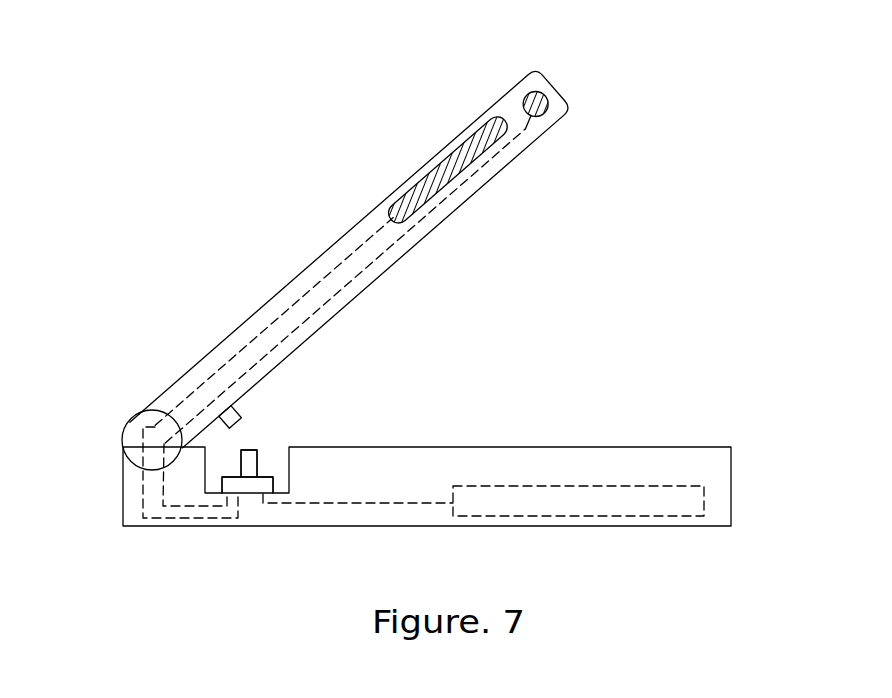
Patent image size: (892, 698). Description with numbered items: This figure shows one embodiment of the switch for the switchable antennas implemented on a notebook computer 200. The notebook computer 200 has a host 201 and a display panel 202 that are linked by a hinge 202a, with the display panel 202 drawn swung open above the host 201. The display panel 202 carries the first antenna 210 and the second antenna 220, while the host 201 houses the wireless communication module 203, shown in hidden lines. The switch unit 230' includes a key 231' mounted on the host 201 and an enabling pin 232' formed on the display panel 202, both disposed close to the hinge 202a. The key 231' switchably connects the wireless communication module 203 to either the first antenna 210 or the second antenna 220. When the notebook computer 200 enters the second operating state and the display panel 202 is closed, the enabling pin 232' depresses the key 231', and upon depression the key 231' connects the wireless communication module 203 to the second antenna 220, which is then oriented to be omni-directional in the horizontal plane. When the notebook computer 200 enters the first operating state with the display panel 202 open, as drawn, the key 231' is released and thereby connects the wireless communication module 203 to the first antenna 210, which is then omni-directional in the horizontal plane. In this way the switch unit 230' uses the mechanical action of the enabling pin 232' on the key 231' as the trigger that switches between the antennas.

The notebook computer 200 is at (785, 94).
The host 201 is at (731, 462).
The display panel 202 is at (568, 100).
The hinge 202a is at (131, 419).
The wireless communication module 203 is at (588, 517).
The first antenna 210 is at (463, 142).
The second antenna 220 is at (528, 92).
The switch unit 230' is at (348, 419).
The key 231' is at (306, 438).
The enabling pin 232' is at (304, 387).